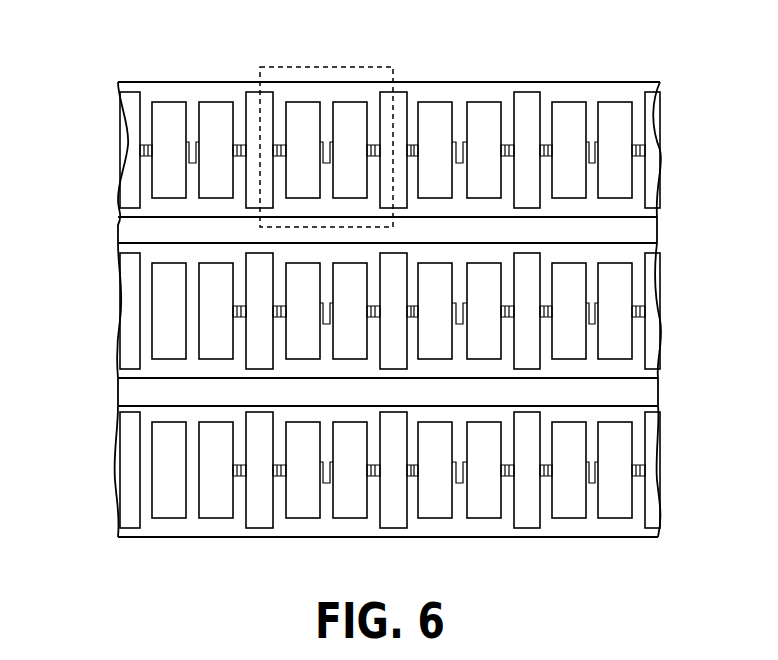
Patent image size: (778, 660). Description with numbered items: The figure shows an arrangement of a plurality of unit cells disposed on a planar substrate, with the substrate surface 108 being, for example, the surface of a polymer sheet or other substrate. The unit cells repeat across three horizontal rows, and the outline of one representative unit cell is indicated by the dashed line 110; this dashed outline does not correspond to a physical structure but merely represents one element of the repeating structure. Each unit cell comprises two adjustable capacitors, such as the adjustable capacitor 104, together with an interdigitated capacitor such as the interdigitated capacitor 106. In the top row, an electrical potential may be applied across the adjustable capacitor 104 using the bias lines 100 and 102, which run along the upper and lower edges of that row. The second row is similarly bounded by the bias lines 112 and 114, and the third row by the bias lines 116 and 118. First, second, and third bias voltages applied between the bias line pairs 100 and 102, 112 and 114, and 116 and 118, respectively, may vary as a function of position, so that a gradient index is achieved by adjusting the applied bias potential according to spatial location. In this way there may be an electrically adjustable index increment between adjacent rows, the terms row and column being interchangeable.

The bias line 100 is at (128, 88).
The bias line 102 is at (127, 212).
The adjustable capacitor 104 is at (141, 148).
The interdigitated capacitor 106 is at (194, 150).
The substrate surface 108 is at (528, 57).
The dashed line 110 is at (295, 67).
The bias line 112 is at (127, 248).
The bias line 114 is at (127, 373).
The bias line 116 is at (127, 410).
The bias line 118 is at (127, 532).